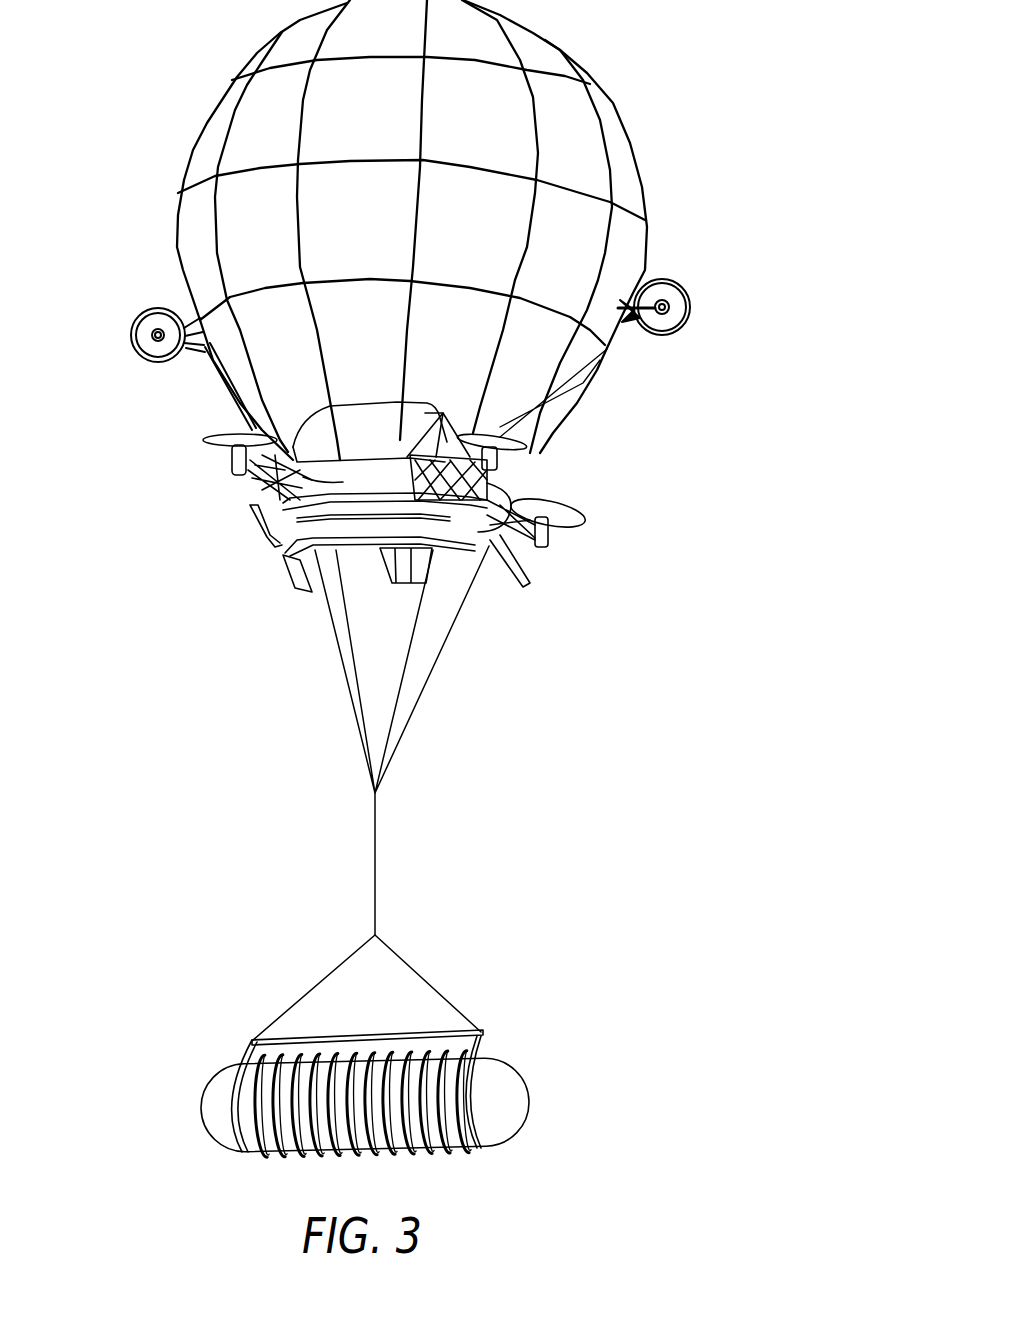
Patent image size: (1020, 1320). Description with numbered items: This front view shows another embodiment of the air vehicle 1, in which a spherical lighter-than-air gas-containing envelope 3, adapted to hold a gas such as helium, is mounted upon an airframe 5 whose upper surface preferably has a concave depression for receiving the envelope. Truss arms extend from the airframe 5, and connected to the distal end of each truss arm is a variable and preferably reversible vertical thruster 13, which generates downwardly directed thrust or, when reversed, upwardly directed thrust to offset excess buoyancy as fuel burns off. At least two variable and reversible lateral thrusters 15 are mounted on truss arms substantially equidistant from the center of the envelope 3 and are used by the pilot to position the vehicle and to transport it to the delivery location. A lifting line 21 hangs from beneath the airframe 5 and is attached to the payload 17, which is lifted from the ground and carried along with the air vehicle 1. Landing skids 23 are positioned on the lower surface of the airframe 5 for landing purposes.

The air vehicle 1 is at (748, 421).
The lighter-than-air gas-containing envelope 3 is at (613, 104).
The airframe 5 is at (292, 493).
The vertical thruster 13 is at (564, 489).
The lateral thruster 15 is at (140, 318).
The payload 17 is at (540, 1110).
The lifting line 21 is at (377, 865).
The landing skids 23 is at (290, 574).